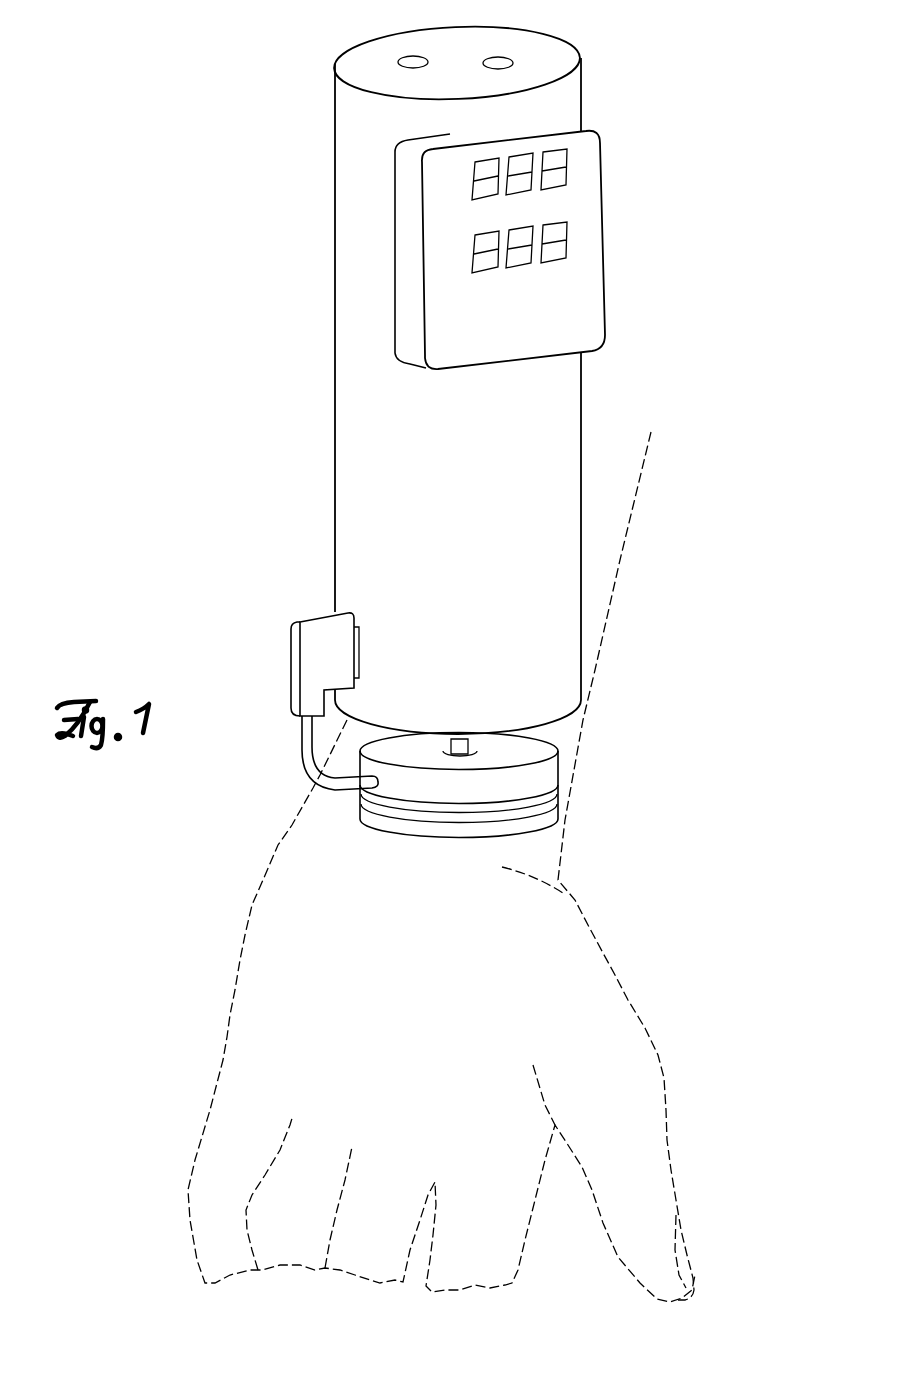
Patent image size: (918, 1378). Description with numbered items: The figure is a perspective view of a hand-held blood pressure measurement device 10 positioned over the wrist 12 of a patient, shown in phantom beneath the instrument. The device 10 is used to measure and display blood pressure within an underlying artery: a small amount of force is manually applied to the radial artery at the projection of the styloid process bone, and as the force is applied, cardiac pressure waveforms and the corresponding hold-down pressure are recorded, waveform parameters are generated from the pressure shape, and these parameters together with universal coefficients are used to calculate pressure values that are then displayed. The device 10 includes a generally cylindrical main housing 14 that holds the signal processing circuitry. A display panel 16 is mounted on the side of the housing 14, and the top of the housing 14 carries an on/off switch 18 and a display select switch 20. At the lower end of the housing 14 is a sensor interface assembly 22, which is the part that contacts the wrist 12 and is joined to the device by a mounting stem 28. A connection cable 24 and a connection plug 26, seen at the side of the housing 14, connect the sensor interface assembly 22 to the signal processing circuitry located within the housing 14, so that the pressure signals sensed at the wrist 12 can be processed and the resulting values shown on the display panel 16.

The blood pressure measurement device 10 is at (240, 381).
The wrist 12 is at (557, 849).
The main housing 14 is at (488, 479).
The display panel 16 is at (527, 333).
The on/off switch 18 is at (413, 62).
The display select switch 20 is at (498, 63).
The sensor interface assembly 22 is at (488, 802).
The connection cable 24 is at (302, 755).
The connection plug 26 is at (326, 640).
The mounting stem 28 is at (460, 739).